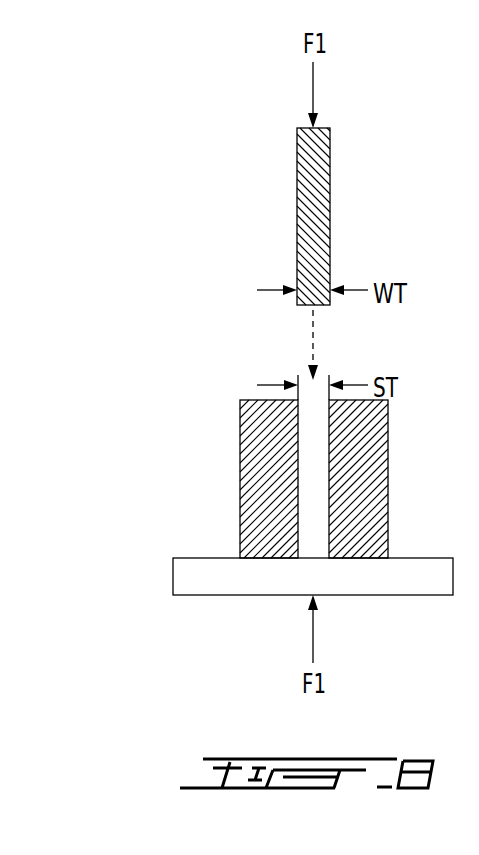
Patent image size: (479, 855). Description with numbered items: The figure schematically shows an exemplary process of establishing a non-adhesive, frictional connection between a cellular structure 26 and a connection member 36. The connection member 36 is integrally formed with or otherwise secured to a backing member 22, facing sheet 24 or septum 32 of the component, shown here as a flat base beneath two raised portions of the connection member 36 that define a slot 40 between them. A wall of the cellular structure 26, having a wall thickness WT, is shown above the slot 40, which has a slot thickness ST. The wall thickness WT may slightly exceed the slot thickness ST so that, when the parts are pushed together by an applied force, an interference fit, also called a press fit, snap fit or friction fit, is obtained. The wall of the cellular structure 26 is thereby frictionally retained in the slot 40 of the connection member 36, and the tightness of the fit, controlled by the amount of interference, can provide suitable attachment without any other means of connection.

The cellular structure 26 is at (310, 187).
The connection member 36 is at (258, 418).
The slot 40 is at (313, 530).
The backing member 22 is at (243, 576).
The facing sheet 24 is at (243, 576).
The septum 32 is at (173, 572).